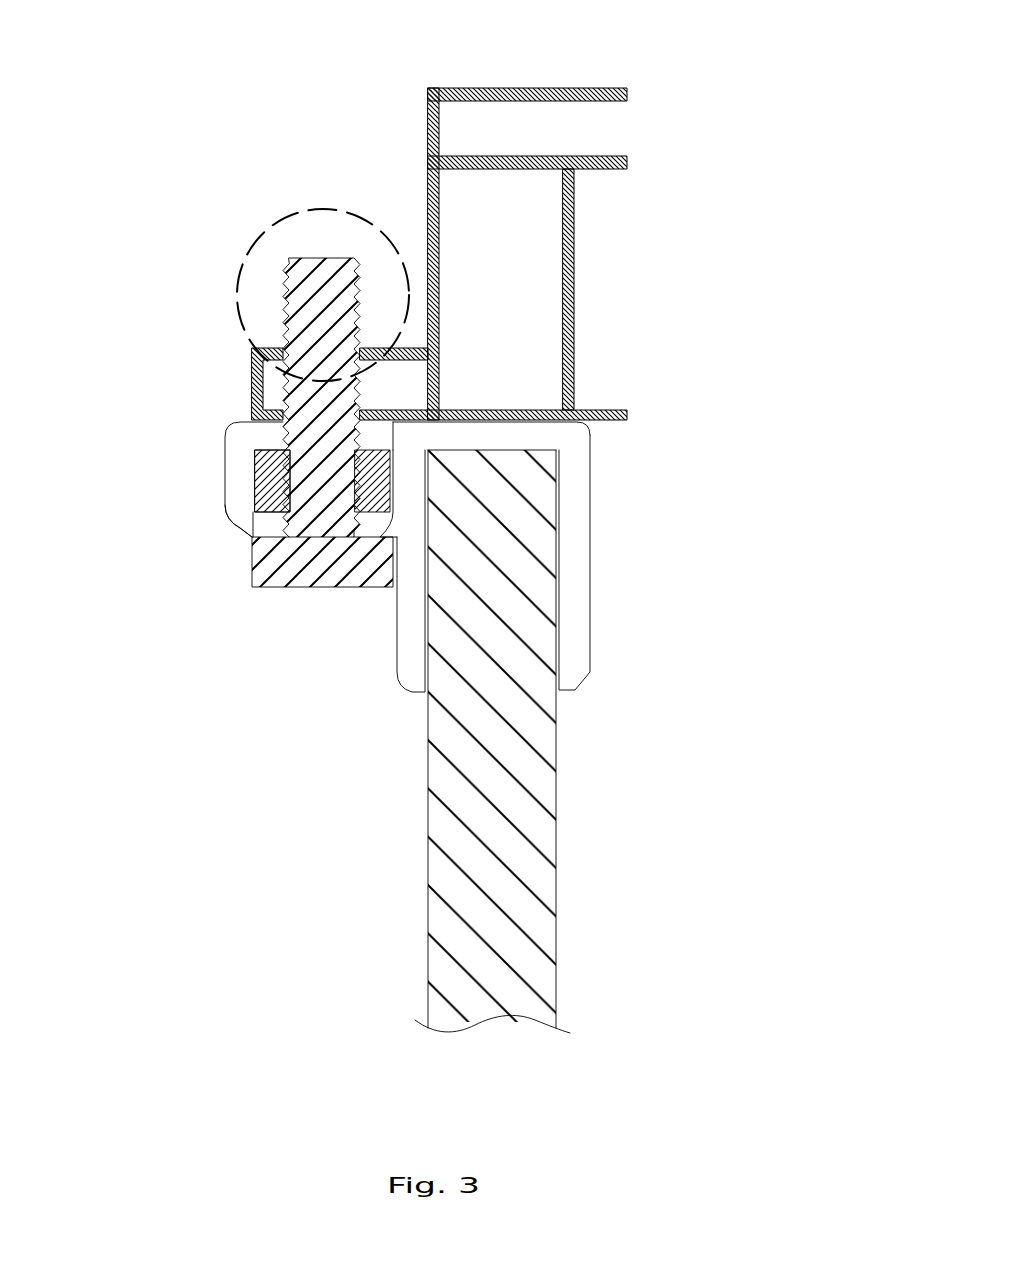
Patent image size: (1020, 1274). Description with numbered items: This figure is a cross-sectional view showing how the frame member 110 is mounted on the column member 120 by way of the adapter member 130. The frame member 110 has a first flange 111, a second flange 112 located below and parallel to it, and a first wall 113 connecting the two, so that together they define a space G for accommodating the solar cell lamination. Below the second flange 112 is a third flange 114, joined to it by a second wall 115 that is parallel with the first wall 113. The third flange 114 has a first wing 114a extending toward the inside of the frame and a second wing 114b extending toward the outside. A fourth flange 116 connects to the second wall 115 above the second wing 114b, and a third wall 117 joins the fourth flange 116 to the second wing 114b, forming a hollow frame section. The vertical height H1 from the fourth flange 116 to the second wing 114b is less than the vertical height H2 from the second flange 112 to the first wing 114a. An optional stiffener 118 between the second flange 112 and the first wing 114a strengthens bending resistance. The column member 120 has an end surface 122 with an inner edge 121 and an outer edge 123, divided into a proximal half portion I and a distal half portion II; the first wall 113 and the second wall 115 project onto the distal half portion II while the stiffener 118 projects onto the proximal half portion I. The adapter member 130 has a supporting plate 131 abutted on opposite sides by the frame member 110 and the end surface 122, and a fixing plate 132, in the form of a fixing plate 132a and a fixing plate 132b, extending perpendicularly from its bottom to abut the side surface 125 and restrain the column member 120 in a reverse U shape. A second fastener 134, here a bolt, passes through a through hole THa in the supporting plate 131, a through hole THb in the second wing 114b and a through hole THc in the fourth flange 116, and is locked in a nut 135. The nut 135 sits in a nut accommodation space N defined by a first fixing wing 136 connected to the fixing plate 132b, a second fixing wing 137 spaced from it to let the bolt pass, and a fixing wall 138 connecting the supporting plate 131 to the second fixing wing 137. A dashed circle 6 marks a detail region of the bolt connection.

The frame member 110 is at (747, 72).
The first flange 111 is at (627, 96).
The second flange 112 is at (627, 162).
The first wall 113 is at (428, 112).
The third flange 114 is at (576, 358).
The first wing 114a is at (598, 410).
The second wing 114b is at (405, 408).
The second wall 115 is at (433, 232).
The fourth flange 116 is at (372, 358).
The third wall 117 is at (252, 380).
The stiffener 118 is at (575, 265).
The column member 120 is at (540, 925).
The inner edge 121 is at (556, 450).
The end surface 122 is at (493, 450).
The outer edge 123 is at (428, 450).
The side surface 125 is at (555, 828).
The adapter member 130 is at (606, 592).
The supporting plate 131 is at (505, 435).
The fixing plate 132 is at (602, 598).
The fixing plate 132a is at (578, 655).
The fixing plate 132b is at (411, 673).
The second fastener 134 is at (270, 572).
The nut 135 is at (258, 500).
The first fixing wing 136 is at (378, 525).
The second fixing wing 137 is at (253, 525).
The fixing wall 138 is at (233, 497).
The detail region 6 is at (265, 232).
The space G is at (618, 132).
The vertical height H1 is at (132, 350).
The vertical height H2 is at (798, 157).
The nut accommodation space N is at (247, 481).
The through hole THa is at (276, 433).
The through hole THb is at (276, 413).
The through hole THc is at (276, 345).
The proximal half portion I is at (556, 1043).
The distal half portion II is at (491, 1085).